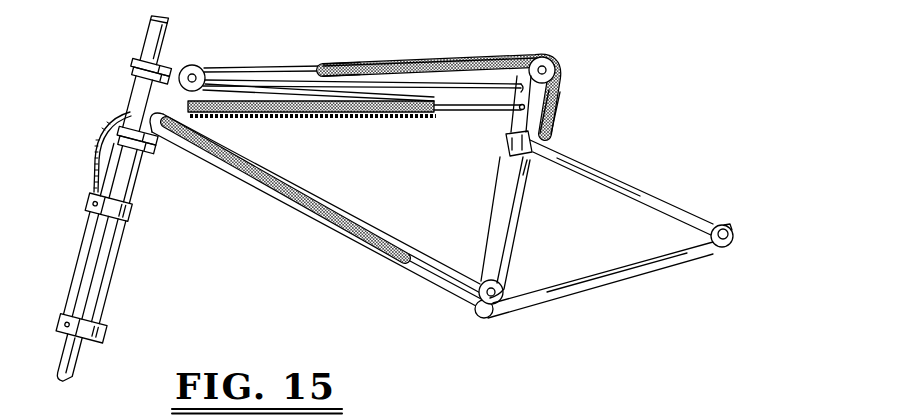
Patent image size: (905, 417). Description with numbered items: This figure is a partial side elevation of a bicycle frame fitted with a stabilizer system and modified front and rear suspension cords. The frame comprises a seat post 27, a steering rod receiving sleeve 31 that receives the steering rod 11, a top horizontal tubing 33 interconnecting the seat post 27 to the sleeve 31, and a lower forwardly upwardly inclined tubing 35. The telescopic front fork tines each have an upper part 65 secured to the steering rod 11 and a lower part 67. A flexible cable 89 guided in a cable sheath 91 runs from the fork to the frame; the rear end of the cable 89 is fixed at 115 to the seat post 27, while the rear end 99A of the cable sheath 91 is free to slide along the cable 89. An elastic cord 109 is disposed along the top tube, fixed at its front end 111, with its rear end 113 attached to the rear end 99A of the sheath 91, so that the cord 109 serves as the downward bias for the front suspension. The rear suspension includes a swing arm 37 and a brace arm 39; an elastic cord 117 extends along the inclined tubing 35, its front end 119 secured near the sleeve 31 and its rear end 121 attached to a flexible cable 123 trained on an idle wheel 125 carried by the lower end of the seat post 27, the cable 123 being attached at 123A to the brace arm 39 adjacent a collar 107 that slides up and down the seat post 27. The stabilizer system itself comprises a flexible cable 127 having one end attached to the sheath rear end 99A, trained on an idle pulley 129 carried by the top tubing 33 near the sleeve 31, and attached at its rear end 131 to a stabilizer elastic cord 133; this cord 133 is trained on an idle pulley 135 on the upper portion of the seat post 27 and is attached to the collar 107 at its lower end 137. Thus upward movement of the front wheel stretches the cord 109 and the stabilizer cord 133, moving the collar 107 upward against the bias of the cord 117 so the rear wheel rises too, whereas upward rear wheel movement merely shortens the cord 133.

The steering rod 11 is at (134, 106).
The steering rod receiving sleeve 31 is at (128, 102).
The front end of elastic cord 111 is at (160, 107).
The cable sheath 91 is at (95, 156).
The lower part of tine 67 is at (148, 281).
The upper part of tine 65 is at (129, 364).
The idle pulley 129 is at (192, 64).
The flexible cable 127 is at (268, 66).
The rear end of flexible cable 131 is at (322, 64).
The rear end of elastic cord 113 is at (430, 100).
The stabilizer elastic cord 133 is at (468, 61).
The top horizontal tubing 33 is at (478, 92).
The idle pulley 135 is at (556, 73).
The lower end of stabilizer elastic cord 137 is at (560, 138).
The front end of elastic cord 119 is at (200, 128).
The elastic cord 109 is at (310, 113).
The rear end of cable sheath 99A is at (432, 104).
The flexible cable 89 is at (452, 111).
The rear end attachment of cable 115 is at (519, 108).
The collar 107 is at (503, 155).
The elastic cord 117 is at (283, 184).
The rear end of elastic cord 121 is at (410, 256).
The lower forwardly upwardly inclined tubing 35 is at (423, 278).
The idle wheel 125 is at (498, 303).
The seat post 27 is at (503, 210).
The flexible cable 123 is at (520, 257).
The rear end attachment of cable 123A is at (532, 158).
The brace arm 39 is at (643, 190).
The swing arm 37 is at (542, 293).